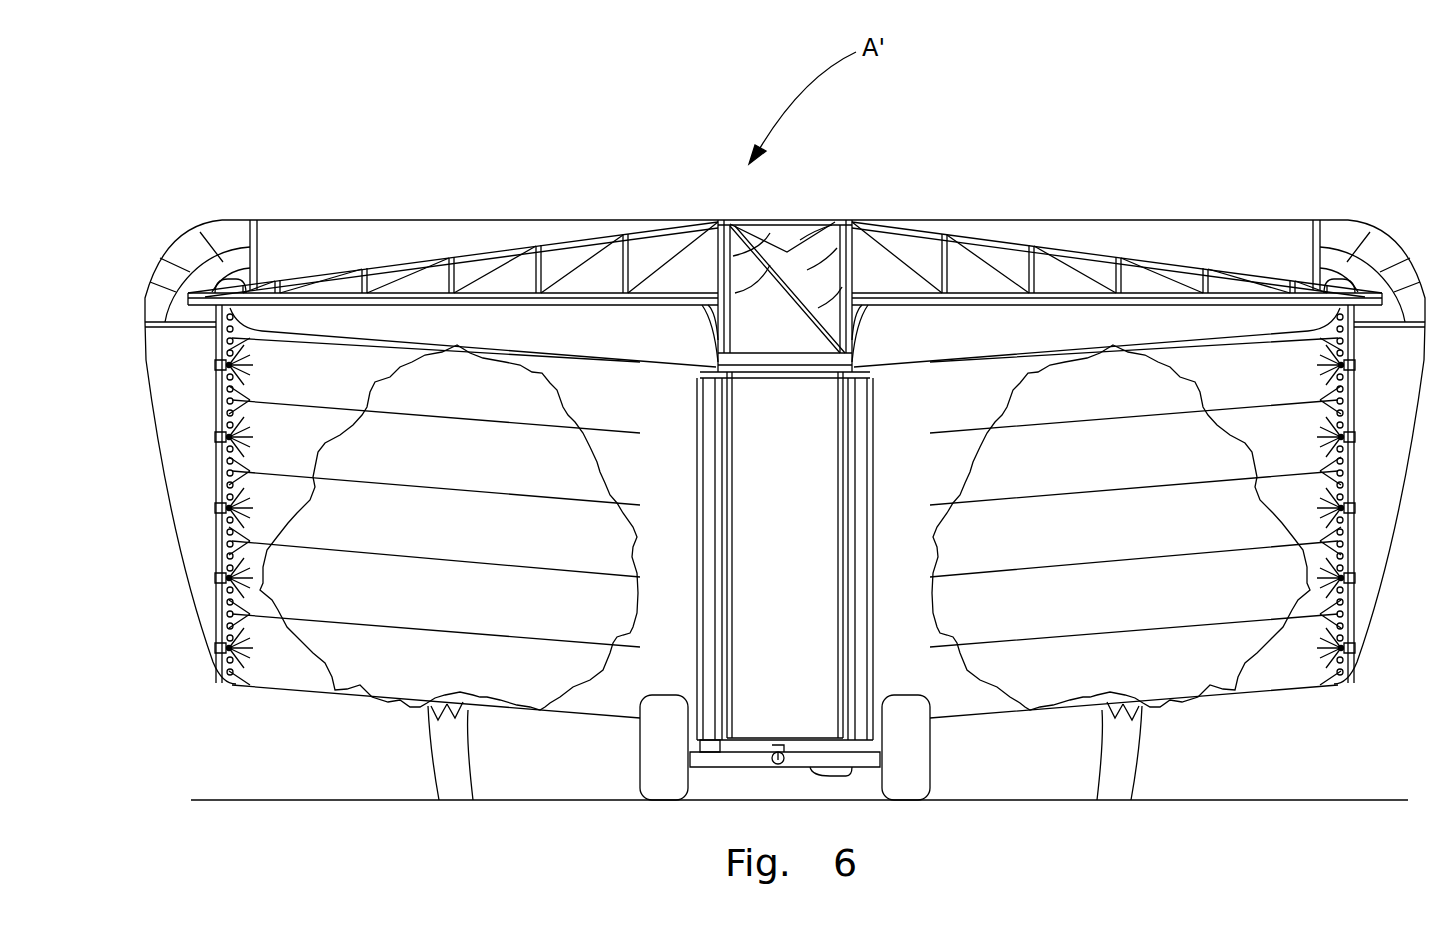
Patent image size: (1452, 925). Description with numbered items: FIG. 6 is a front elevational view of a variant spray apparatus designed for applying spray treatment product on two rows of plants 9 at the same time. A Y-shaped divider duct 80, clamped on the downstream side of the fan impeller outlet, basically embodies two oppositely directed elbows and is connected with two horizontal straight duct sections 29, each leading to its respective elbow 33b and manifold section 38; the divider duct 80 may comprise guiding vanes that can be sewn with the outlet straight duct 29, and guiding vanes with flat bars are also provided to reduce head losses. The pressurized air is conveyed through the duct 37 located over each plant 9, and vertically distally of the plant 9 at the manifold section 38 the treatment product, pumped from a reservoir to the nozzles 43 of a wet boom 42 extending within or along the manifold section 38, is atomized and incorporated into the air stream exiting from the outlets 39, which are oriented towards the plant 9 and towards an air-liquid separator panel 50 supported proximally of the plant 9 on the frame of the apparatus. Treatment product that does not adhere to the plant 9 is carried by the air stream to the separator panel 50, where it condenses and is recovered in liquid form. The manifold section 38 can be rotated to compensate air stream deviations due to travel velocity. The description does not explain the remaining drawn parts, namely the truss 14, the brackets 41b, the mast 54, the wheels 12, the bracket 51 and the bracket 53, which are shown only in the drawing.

The elbow 33b is at (190, 227).
The horizontal straight duct section 29 is at (335, 238).
The duct 37 is at (440, 217).
The Y-shaped divider duct 80 is at (787, 252).
The truss boom 14 is at (558, 308).
The bracket 41b is at (665, 288).
The air-liquid separator panel 50 is at (697, 392).
The mast 54 is at (712, 570).
The outlets 39 is at (258, 400).
The wet boom 42 is at (213, 343).
The manifold section 38 is at (170, 463).
The nozzles 43 is at (213, 578).
The plant 9 is at (435, 735).
The wheel 12 is at (642, 748).
The mast base bracket 51 is at (713, 747).
The hitch bracket 53 is at (825, 770).